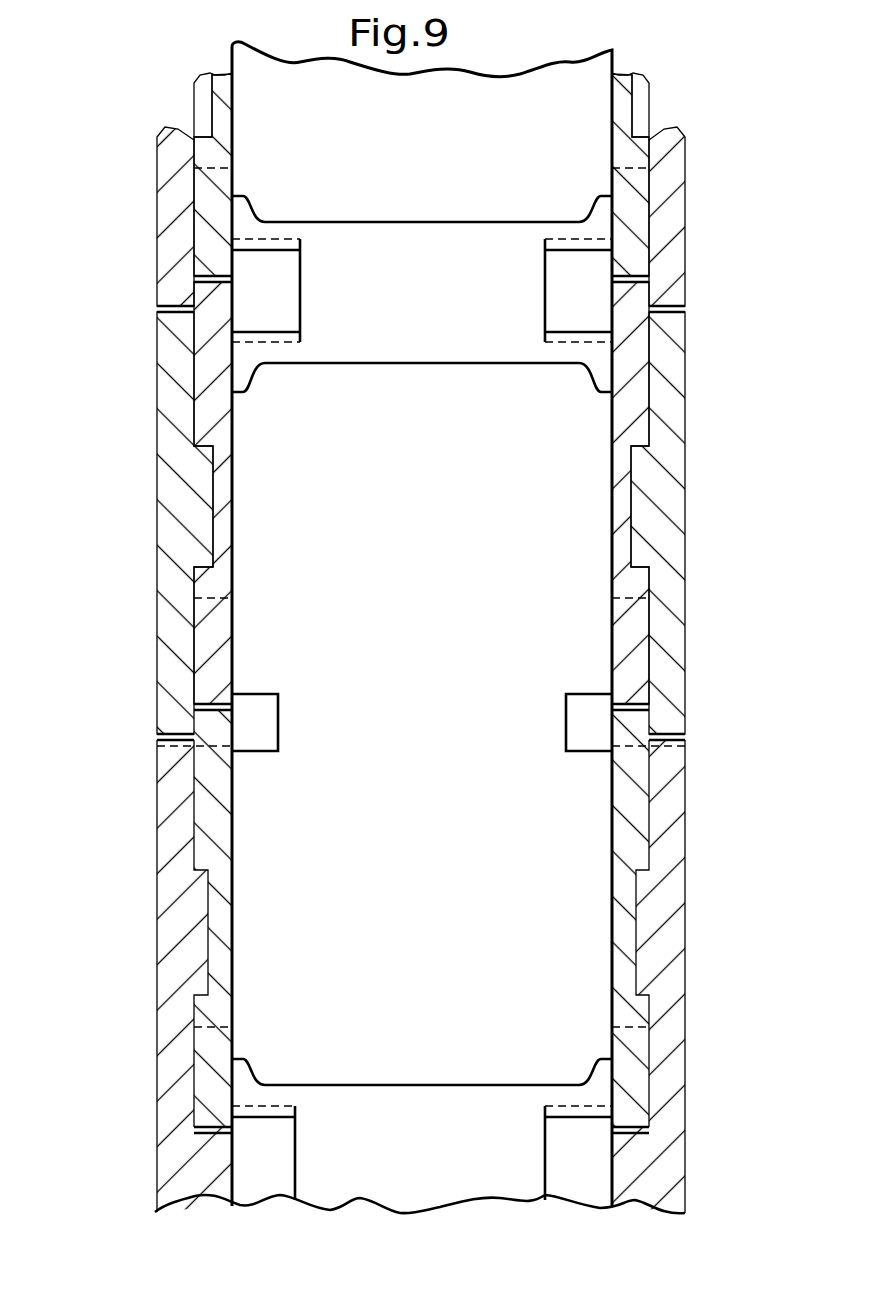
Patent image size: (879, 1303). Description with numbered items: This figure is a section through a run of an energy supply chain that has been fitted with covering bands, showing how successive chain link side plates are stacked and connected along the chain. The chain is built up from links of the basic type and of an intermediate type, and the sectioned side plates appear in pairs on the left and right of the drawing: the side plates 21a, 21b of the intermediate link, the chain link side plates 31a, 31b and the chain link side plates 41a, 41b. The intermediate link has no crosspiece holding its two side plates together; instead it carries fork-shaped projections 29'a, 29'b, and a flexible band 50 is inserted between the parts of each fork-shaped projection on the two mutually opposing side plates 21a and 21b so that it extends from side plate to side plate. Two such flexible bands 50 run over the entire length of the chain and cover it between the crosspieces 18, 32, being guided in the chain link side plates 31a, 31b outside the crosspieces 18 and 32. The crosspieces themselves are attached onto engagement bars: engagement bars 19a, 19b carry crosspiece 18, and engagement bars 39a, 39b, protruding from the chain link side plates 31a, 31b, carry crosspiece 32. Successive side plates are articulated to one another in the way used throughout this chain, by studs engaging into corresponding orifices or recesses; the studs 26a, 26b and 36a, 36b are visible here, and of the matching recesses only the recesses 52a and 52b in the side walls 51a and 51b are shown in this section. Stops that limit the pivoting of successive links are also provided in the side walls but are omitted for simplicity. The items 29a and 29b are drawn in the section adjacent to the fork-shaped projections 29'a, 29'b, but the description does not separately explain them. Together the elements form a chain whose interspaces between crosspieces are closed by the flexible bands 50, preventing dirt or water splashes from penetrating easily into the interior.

The flexible band 50 is at (475, 150).
The crosspiece 18 is at (403, 1162).
The crosspiece 32 is at (437, 302).
The recess 52b is at (232, 118).
The recess 52a is at (633, 120).
The side wall 51b is at (205, 207).
The side wall 51a is at (633, 218).
The chain link side plate 41b is at (183, 156).
The chain link side plate 41a is at (670, 163).
The engagement bar 39b is at (257, 288).
The engagement bar 39a is at (583, 293).
The chain link side plate 31b is at (177, 432).
The chain link side plate 31a is at (660, 427).
The stud 36b is at (208, 538).
The stud 36a is at (638, 541).
The fork-shaped projection 29'b is at (169, 712).
The fork-shaped projection 29'a is at (667, 711).
The clip 29b is at (250, 745).
The clip 29a is at (587, 744).
The side plate 21b is at (172, 848).
The side plate 21a is at (665, 848).
The stud 26b is at (197, 955).
The stud 26a is at (630, 962).
The engagement bar 19b is at (260, 1160).
The engagement bar 19a is at (582, 1165).